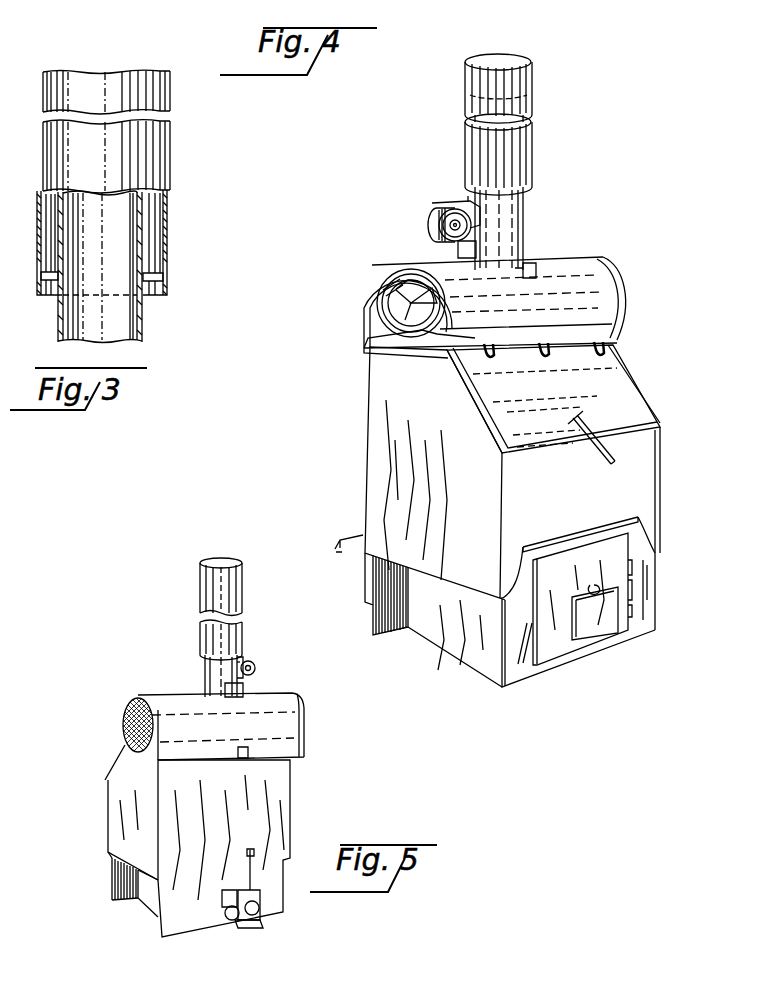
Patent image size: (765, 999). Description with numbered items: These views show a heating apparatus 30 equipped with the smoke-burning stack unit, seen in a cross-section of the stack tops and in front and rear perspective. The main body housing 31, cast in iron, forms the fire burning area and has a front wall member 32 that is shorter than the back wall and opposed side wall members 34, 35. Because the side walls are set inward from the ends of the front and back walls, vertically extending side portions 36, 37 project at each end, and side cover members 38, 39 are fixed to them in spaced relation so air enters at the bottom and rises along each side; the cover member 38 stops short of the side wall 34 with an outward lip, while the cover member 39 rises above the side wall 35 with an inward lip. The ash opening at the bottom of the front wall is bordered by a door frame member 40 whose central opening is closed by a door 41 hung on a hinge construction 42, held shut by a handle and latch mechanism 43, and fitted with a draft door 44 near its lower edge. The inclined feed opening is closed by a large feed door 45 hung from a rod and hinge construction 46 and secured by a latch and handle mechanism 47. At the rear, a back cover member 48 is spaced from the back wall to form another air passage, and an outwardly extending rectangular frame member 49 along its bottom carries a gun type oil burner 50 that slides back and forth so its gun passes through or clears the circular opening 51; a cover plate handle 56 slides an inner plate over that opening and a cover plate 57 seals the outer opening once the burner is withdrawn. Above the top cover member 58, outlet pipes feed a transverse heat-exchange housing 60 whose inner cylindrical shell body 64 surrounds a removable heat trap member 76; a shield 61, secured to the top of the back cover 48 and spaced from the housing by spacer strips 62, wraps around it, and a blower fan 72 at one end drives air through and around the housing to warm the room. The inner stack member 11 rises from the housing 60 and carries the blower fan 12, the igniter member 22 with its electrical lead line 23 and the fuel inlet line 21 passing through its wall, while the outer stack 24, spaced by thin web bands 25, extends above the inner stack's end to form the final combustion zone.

In FIG. 3, the inner cylindrical stack member 11 is at (143, 330).
In FIG. 4, the inner cylindrical stack member 11 is at (526, 200).
In FIG. 5, the inner cylindrical stack member 11 is at (205, 664).
In FIG. 4, the air inducer or blower fan 12 is at (428, 222).
In FIG. 5, the air inducer or blower fan 12 is at (259, 678).
In FIG. 4, the fuel inlet line 21 is at (462, 249).
In FIG. 4, the igniter member 22 is at (468, 197).
In FIG. 5, the igniter member 22 is at (242, 652).
In FIG. 4, the electrical lead line 23 is at (440, 201).
In FIG. 5, the electrical lead line 23 is at (250, 655).
In FIG. 3, the outer stack 24 is at (170, 112).
In FIG. 4, the outer stack 24 is at (465, 135).
In FIG. 5, the outer stack 24 is at (242, 616).
In FIG. 3, the finger webs 25 is at (44, 245).
In FIG. 4, the heating apparatus 30 is at (321, 456).
In FIG. 5, the heating apparatus 30 is at (212, 959).
In FIG. 4, the main body housing 31 is at (523, 690).
In FIG. 5, the main body housing 31 is at (175, 931).
In FIG. 4, the front wall member 32 is at (652, 630).
In FIG. 4, the side wall member 34 is at (450, 633).
In FIG. 5, the side wall member 35 is at (140, 900).
In FIG. 4, the side portion 36 is at (385, 622).
In FIG. 5, the side portion 36 is at (112, 885).
In FIG. 4, the side portion 37 is at (500, 680).
In FIG. 5, the side portion 37 is at (158, 927).
In FIG. 4, the side cover member 38 is at (440, 570).
In FIG. 4, the side cover member 39 is at (664, 505).
In FIG. 4, the door frame member 40 is at (576, 530).
In FIG. 4, the door 41 is at (590, 530).
In FIG. 4, the hinge construction 42 is at (645, 582).
In FIG. 4, the handle and latch mechanism 43 is at (530, 672).
In FIG. 4, the draft door 44 is at (588, 640).
In FIG. 4, the feed door 45 is at (628, 355).
In FIG. 4, the rod and hinge construction 46 is at (620, 342).
In FIG. 4, the latch and handle mechanism 47 is at (589, 418).
In FIG. 5, the back cover member 48 is at (289, 800).
In FIG. 5, the rectangular frame member 49 is at (258, 926).
In FIG. 5, the gun type oil burner 50 is at (268, 900).
In FIG. 5, the circular opening 51 is at (226, 892).
In FIG. 4, the cover plate handle 56 is at (354, 535).
In FIG. 5, the cover plate 57 is at (251, 884).
In FIG. 4, the top cover member 58 is at (425, 347).
In FIG. 4, the heat-exchange housing 60 is at (377, 313).
In FIG. 4, the shield 61 is at (385, 280).
In FIG. 4, the spacer strips 62 is at (383, 294).
In FIG. 4, the inner central cylindrical shell body 64 is at (414, 288).
In FIG. 5, the blower fan 72 is at (124, 710).
In FIG. 4, the heat trap member 76 is at (395, 320).